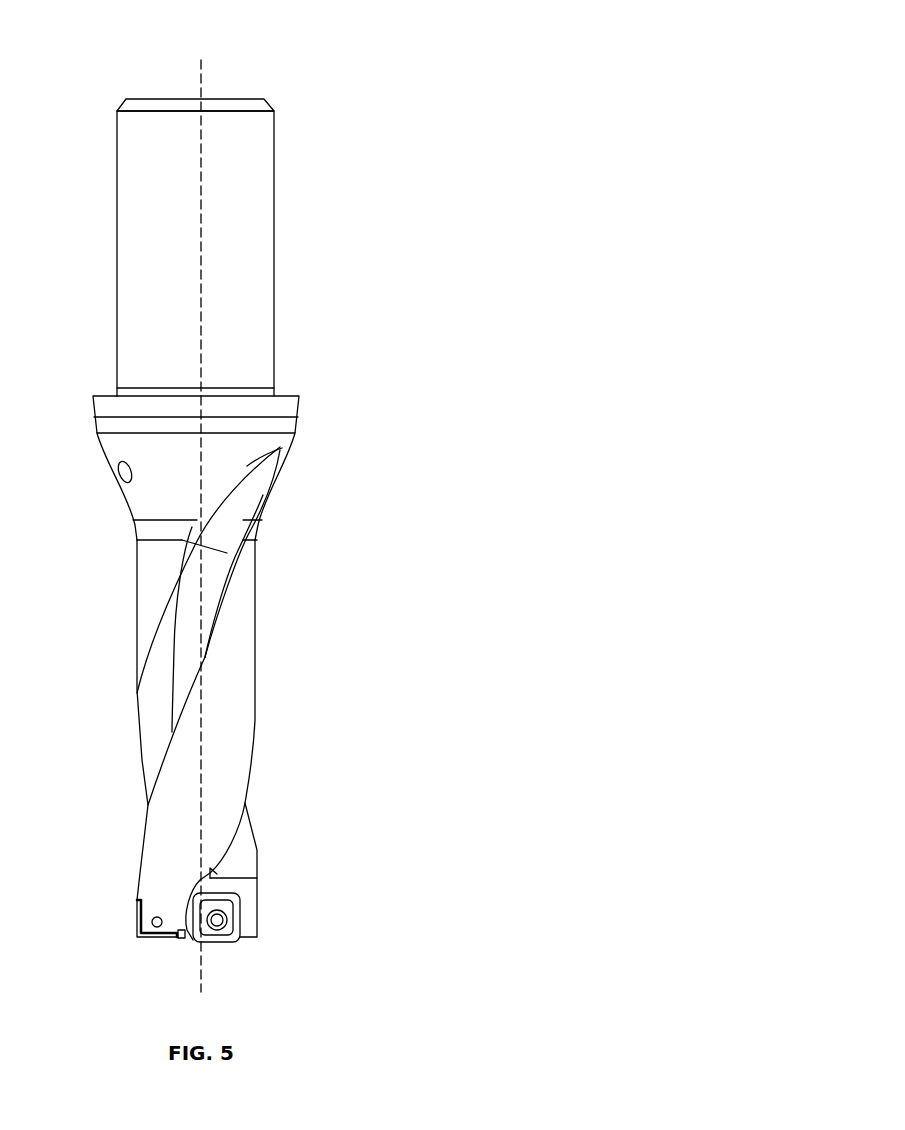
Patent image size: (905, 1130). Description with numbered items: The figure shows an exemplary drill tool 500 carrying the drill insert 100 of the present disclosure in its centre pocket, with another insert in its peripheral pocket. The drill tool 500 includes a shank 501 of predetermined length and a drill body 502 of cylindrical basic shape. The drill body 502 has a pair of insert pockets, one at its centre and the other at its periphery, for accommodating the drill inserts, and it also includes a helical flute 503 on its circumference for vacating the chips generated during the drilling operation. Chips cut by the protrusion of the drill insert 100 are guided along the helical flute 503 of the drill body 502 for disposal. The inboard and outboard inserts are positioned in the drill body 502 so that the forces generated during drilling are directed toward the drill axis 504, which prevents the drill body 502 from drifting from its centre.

The drill tool 500 is at (288, 477).
The shank 501 is at (275, 251).
The drill body 502 is at (215, 693).
The helical flute 503 is at (145, 708).
The drill axis 504 is at (213, 480).
The drill insert 100 is at (247, 920).